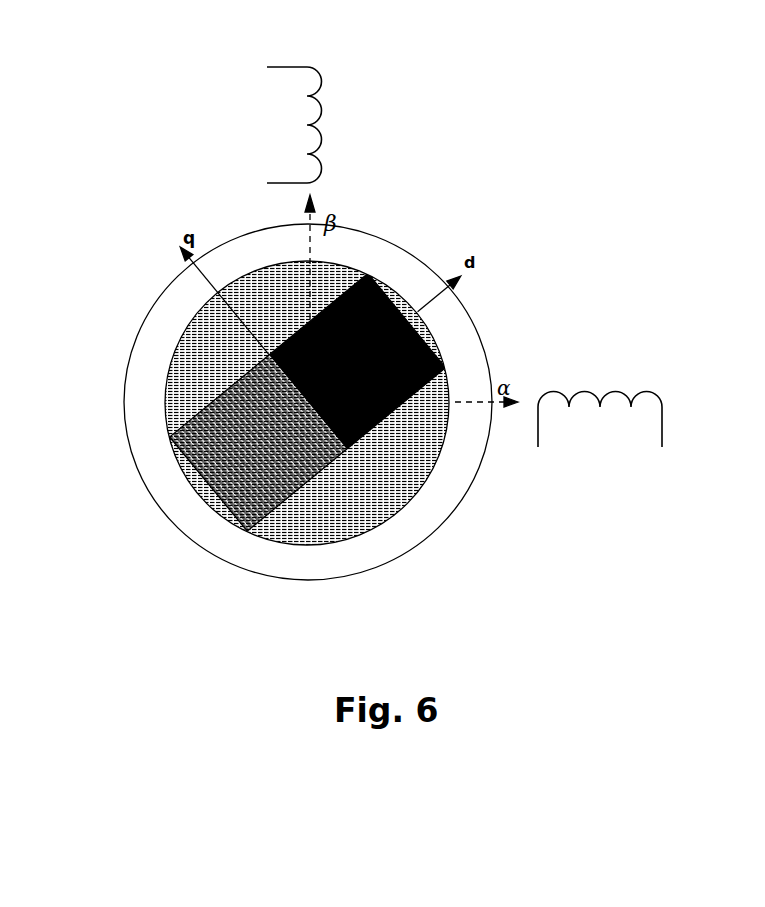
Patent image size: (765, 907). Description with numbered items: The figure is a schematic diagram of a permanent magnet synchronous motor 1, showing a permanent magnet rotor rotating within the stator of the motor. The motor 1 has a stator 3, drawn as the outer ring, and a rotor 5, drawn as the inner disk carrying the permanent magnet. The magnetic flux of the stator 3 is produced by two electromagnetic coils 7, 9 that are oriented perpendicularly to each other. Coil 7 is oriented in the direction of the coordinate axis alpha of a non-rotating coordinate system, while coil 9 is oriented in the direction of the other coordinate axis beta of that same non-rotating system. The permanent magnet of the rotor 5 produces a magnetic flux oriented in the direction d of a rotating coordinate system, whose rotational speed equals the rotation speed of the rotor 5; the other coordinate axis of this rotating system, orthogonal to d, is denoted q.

The permanent magnet synchronous motor 1 is at (255, 575).
The stator 3 is at (176, 511).
The rotor 5 is at (207, 440).
The electromagnetic coil 7 is at (598, 390).
The electromagnetic coil 9 is at (283, 62).